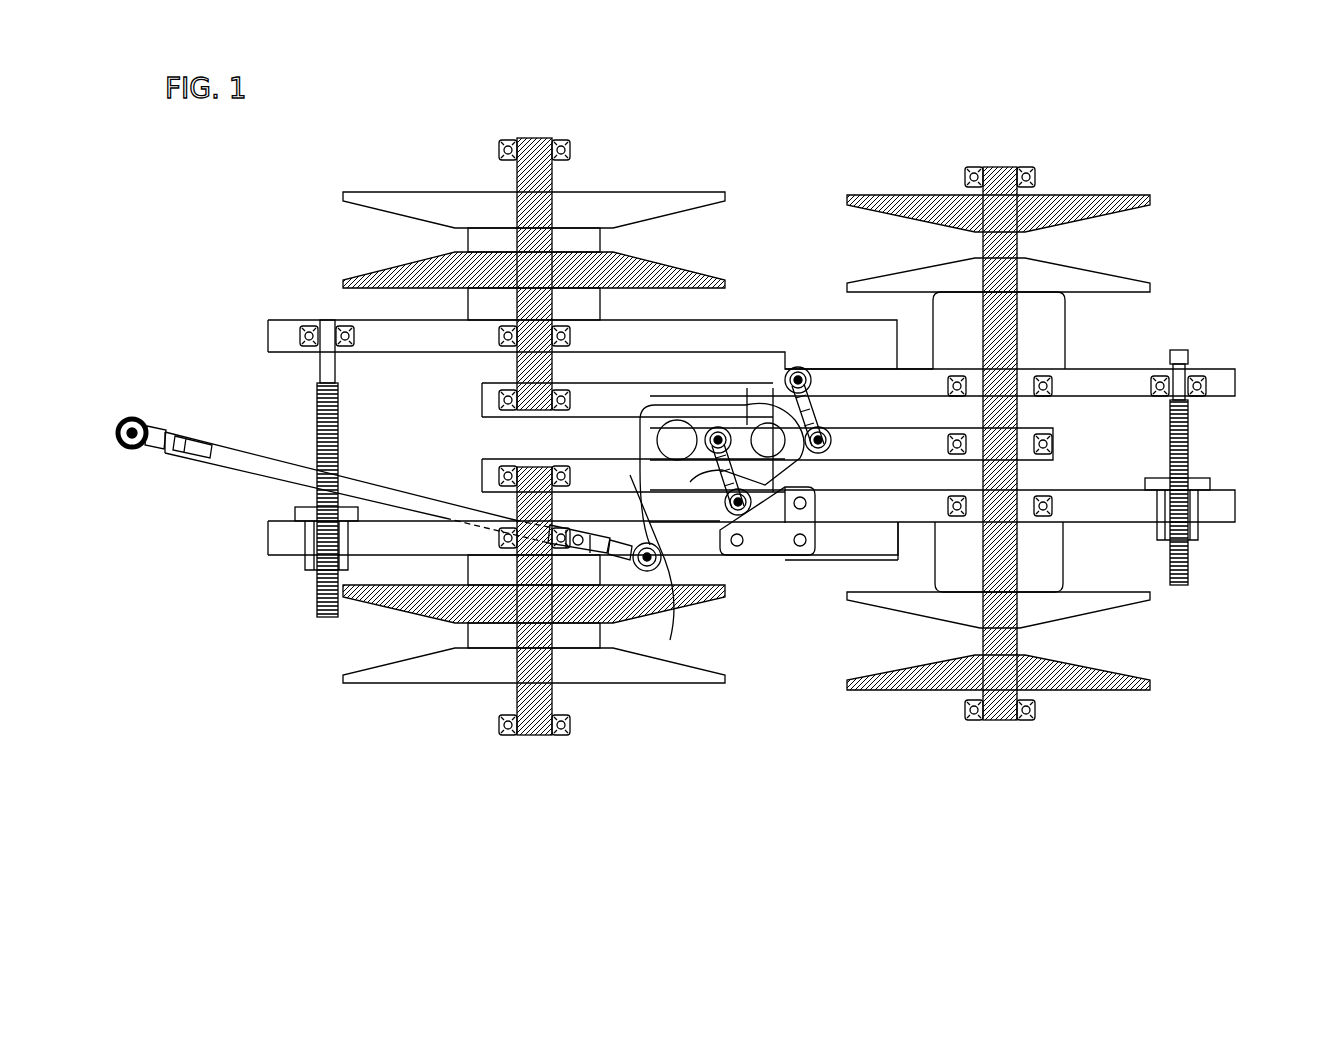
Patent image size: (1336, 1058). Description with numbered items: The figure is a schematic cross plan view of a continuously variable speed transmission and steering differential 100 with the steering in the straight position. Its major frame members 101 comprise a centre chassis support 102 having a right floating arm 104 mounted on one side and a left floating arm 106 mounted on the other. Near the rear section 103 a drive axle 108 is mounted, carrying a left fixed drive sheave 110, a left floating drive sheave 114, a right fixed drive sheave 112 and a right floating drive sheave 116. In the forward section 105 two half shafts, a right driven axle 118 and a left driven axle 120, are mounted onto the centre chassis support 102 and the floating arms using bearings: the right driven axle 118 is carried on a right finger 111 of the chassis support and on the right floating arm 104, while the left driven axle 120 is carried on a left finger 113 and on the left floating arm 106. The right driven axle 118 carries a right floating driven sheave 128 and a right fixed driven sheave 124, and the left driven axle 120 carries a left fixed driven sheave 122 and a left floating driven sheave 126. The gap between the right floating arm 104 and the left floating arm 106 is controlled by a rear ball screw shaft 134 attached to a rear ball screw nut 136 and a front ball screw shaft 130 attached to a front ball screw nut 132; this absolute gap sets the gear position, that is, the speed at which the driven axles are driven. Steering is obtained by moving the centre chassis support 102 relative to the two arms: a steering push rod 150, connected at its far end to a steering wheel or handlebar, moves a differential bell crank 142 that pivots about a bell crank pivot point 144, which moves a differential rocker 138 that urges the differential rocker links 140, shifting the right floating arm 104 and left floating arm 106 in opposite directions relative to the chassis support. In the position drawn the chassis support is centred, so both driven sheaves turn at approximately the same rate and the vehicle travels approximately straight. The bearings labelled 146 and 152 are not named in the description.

The continuously variable speed transmission and steering differential 100 is at (285, 240).
The major frame members 101 is at (836, 752).
The centre chassis support 102 is at (930, 437).
The rear section 103 is at (1168, 695).
The right floating arm 104 is at (708, 336).
The forward section 105 is at (372, 772).
The left floating arm 106 is at (855, 540).
The drive axle 108 is at (1007, 713).
The left fixed drive sheave 110 is at (1078, 690).
The right finger 111 is at (717, 392).
The right fixed drive sheave 112 is at (1038, 206).
The left finger 113 is at (630, 473).
The left floating drive sheave 114 is at (1078, 602).
The right floating drive sheave 116 is at (1047, 282).
The right driven axle 118 is at (530, 145).
The left driven axle 120 is at (533, 740).
The left fixed driven sheave 122 is at (405, 600).
The right fixed driven sheave 124 is at (665, 268).
The left floating driven sheave 126 is at (425, 665).
The right floating driven sheave 128 is at (418, 195).
The front ball screw shaft 130 is at (322, 370).
The front ball screw nut 132 is at (308, 555).
The rear ball screw shaft 134 is at (1195, 470).
The rear ball screw nut 136 is at (1193, 527).
The differential rocker 138 is at (748, 420).
The differential rocker link 140 is at (808, 420).
The differential bell crank 142 is at (775, 500).
The bell crank pivot point 144 is at (677, 450).
The bearing 146 is at (492, 338).
The steering push rod 150 is at (233, 457).
The bearing 152 is at (505, 733).